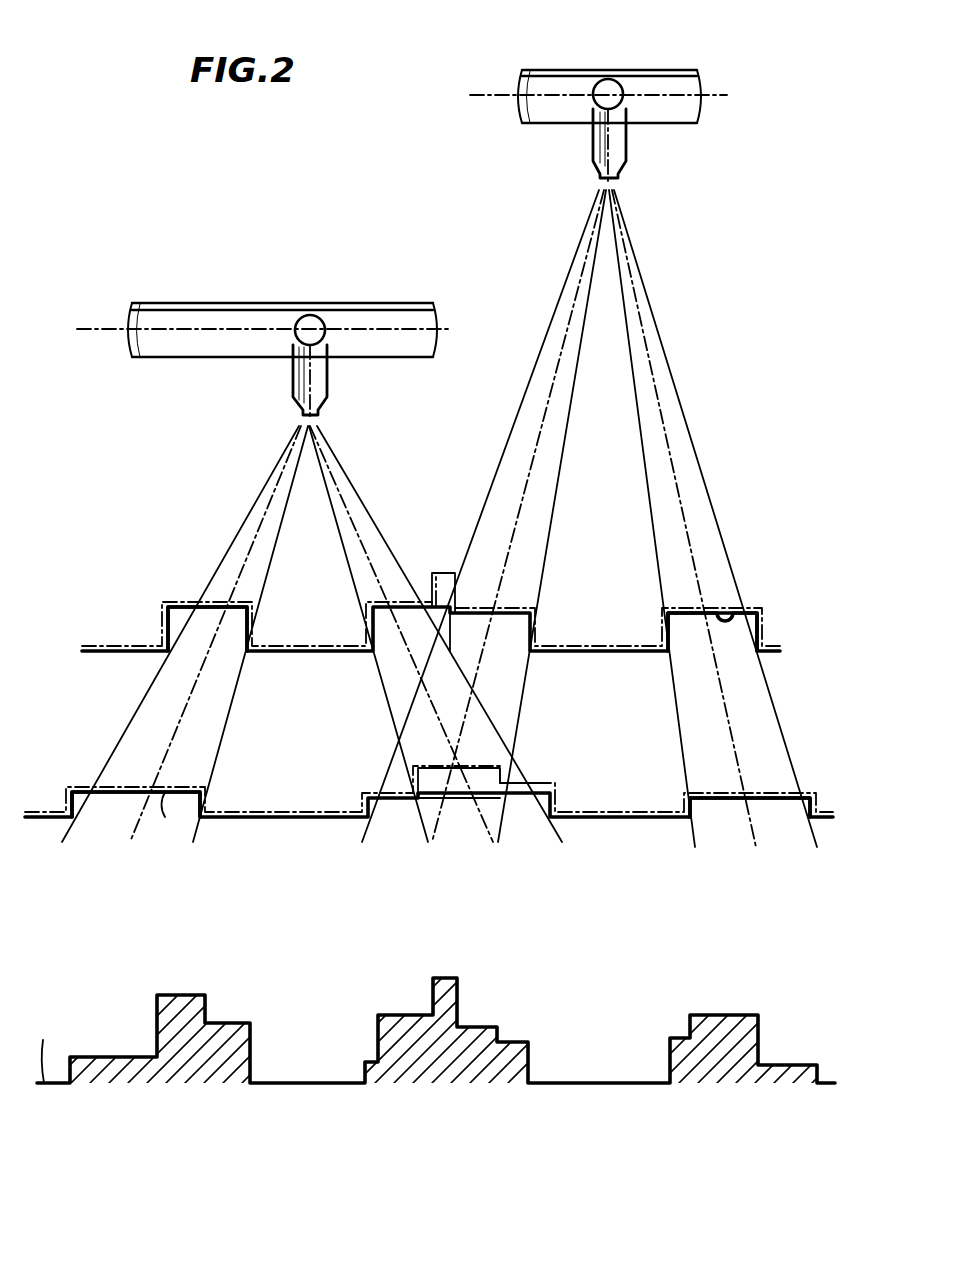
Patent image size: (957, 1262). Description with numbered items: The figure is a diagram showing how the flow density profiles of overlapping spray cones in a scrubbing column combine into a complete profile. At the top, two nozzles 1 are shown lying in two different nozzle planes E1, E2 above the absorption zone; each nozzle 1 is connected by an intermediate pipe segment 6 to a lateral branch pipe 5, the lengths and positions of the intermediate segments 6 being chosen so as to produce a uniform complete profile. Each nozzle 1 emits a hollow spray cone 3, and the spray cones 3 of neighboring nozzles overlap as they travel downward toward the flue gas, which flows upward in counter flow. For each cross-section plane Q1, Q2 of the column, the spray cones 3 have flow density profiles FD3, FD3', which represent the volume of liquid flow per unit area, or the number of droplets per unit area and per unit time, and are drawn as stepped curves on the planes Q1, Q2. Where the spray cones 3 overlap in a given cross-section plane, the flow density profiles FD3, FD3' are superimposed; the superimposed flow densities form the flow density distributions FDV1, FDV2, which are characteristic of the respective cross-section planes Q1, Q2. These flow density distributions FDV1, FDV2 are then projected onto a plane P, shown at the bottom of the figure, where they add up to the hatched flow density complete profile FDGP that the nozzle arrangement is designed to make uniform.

The nozzle 1 is at (320, 397).
The spray cone 3 is at (258, 497).
The lateral branch pipe 5 is at (395, 303).
The intermediate pipe segment 6 is at (333, 312).
The nozzle plane E1 is at (92, 330).
The nozzle plane E2 is at (495, 95).
The flow density profile FD3 is at (140, 710).
The flow density profile FD3' is at (762, 685).
The flow density distribution FDV1 is at (437, 567).
The flow density distribution FDV2 is at (465, 820).
The cross-section plane Q1 is at (188, 657).
The cross-section plane Q2 is at (97, 820).
The flow density complete profile FDGP is at (182, 995).
The projection plane P is at (32, 1039).